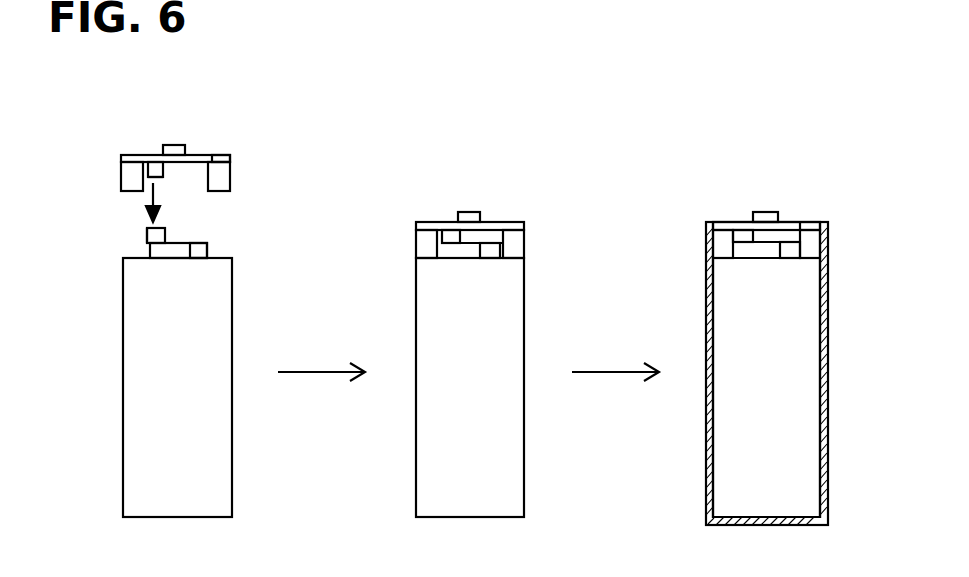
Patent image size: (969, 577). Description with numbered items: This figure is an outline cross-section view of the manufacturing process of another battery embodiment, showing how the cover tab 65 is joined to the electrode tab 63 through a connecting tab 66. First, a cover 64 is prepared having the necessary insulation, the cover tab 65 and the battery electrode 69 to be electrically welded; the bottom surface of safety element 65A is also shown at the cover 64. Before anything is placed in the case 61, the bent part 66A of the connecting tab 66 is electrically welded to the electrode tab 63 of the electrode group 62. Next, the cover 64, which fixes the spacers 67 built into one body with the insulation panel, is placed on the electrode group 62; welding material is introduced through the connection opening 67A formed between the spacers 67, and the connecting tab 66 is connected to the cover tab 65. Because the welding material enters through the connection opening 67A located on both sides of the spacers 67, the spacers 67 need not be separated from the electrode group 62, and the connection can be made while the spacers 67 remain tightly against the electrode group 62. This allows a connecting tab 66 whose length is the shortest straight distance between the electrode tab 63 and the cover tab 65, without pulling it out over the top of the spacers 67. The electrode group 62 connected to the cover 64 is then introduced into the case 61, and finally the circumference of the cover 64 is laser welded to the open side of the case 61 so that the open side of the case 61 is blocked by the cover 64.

The case 61 is at (828, 345).
The electrode group 62 is at (200, 452).
The electrode tab 63 is at (204, 246).
The cover 64 is at (220, 155).
The cover tab 65 is at (148, 165).
The bottom surface of safety element 65A is at (151, 190).
The connecting tab 66 is at (159, 243).
The bent part 66A is at (147, 237).
The spacers 67 is at (222, 181).
The connection opening 67A is at (183, 190).
The battery electrode 69 is at (178, 145).